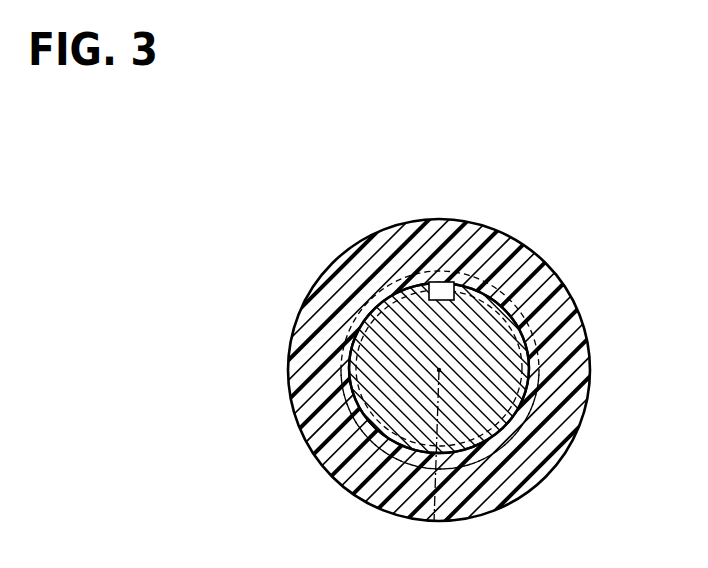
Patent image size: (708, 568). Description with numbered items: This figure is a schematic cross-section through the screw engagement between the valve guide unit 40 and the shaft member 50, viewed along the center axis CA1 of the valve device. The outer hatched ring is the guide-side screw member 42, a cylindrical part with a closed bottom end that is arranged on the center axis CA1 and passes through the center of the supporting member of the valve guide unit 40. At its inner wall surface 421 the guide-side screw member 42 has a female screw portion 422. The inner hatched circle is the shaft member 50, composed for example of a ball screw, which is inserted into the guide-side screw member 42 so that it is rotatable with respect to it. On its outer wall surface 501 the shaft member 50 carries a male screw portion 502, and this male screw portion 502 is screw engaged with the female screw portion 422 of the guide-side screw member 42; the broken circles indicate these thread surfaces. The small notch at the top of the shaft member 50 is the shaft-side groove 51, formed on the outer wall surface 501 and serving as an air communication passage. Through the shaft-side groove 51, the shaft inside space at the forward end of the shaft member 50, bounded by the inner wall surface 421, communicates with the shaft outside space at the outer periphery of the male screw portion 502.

The valve guide unit 40 is at (534, 243).
The guide-side screw member 42 is at (566, 312).
The inner wall surface 421 is at (518, 300).
The female screw portion 422 is at (343, 358).
The shaft member 50 is at (528, 368).
The outer wall surface 501 is at (514, 436).
The male screw portion 502 is at (357, 404).
The shaft-side groove 51 is at (441, 291).
The center axis CA1 is at (434, 522).